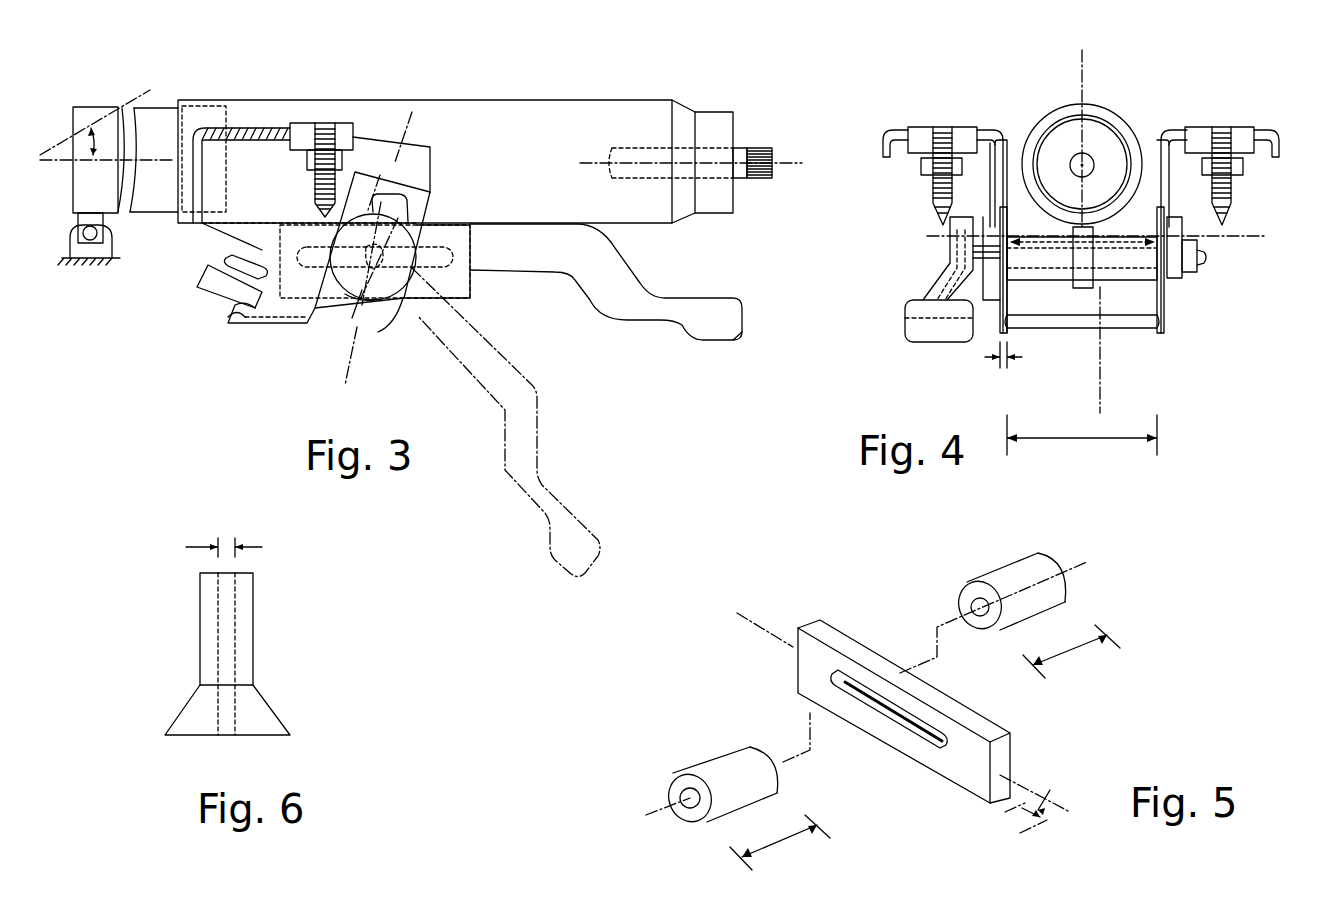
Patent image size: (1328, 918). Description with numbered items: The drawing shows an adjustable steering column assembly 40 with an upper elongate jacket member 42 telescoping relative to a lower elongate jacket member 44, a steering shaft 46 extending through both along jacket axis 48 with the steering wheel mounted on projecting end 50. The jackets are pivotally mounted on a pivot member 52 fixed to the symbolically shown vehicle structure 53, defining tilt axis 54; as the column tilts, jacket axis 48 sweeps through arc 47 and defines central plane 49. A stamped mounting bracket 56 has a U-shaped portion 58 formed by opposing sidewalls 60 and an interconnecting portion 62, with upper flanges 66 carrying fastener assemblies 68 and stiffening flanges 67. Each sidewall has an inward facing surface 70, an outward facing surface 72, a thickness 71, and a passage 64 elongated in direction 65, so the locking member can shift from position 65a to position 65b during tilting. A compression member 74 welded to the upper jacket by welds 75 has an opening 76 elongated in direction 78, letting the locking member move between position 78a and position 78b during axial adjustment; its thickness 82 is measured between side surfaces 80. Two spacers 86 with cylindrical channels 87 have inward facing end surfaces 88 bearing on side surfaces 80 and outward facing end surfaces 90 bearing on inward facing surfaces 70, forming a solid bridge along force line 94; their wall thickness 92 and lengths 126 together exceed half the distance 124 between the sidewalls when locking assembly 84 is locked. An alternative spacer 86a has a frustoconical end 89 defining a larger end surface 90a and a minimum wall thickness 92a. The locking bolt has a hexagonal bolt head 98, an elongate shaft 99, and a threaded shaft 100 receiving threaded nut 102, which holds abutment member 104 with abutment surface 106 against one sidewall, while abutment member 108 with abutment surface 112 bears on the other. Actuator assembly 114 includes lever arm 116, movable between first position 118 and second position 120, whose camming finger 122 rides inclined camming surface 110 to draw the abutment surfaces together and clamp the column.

In FIG. 3, the adjustable steering column assembly 40 is at (403, 77).
In FIG. 4, the adjustable steering column assembly 40 is at (1117, 90).
In FIG. 3, the upper elongate jacket member 42 is at (578, 102).
In FIG. 4, the upper elongate jacket member 42 is at (1046, 110).
In FIG. 3, the lower elongate jacket member 44 is at (147, 110).
In FIG. 3, the steering shaft 46 is at (745, 148).
In FIG. 4, the steering shaft 46 is at (1093, 160).
In FIG. 3, the arc 47 is at (93, 125).
In FIG. 3, the jacket axis 48 is at (55, 163).
In FIG. 4, the jacket axis 48 is at (1028, 120).
In FIG. 4, the central plane 49 is at (1077, 80).
In FIG. 3, the projecting end 50 is at (765, 178).
In FIG. 3, the pivot member 52 is at (98, 243).
In FIG. 3, the vehicle structure 53 is at (113, 242).
In FIG. 3, the tilt axis 54 is at (88, 242).
In FIG. 4, the tilt axis 54 is at (1238, 236).
In FIG. 3, the mounting bracket 56 is at (388, 140).
In FIG. 4, the mounting bracket 56 is at (1167, 135).
In FIG. 4, the U-shaped portion 58 is at (1140, 335).
In FIG. 3, the sidewalls 60 is at (412, 172).
In FIG. 4, the sidewalls 60 is at (1006, 200).
In FIG. 3, the interconnecting portion 62 is at (228, 322).
In FIG. 4, the interconnecting portion 62 is at (1115, 330).
In FIG. 3, the passage 64 is at (410, 200).
In FIG. 3, the direction 65 is at (340, 360).
In FIG. 3, the position 65a is at (395, 305).
In FIG. 3, the position 65b is at (362, 300).
In FIG. 3, the upper flanges 66 is at (210, 128).
In FIG. 4, the upper flanges 66 is at (897, 132).
In FIG. 4, the stiffening flanges 67 is at (990, 150).
In FIG. 3, the fastener assemblies 68 is at (305, 123).
In FIG. 4, the fastener assemblies 68 is at (920, 127).
In FIG. 4, the inward facing surface 70 is at (1030, 332).
In FIG. 4, the thickness 71 is at (995, 362).
In FIG. 4, the outward facing surface 72 is at (1002, 332).
In FIG. 3, the compression member 74 is at (470, 290).
In FIG. 4, the compression member 74 is at (1070, 330).
In FIG. 5, the compression member 74 is at (810, 628).
In FIG. 4, the welds 75 is at (1010, 210).
In FIG. 5, the opening 76 is at (918, 745).
In FIG. 5, the direction 78 is at (1045, 795).
In FIG. 5, the position 78a is at (830, 688).
In FIG. 5, the position 78b is at (902, 735).
In FIG. 5, the side surfaces 80 is at (1015, 752).
In FIG. 5, the thickness 82 is at (1030, 825).
In FIG. 4, the locking assembly 84 is at (1145, 213).
In FIG. 4, the spacers 86 is at (1040, 292).
In FIG. 5, the spacers 86 is at (712, 762).
In FIG. 6, the alternative spacer 86a is at (255, 645).
In FIG. 6, the cylindrical channel 87 is at (232, 608).
In FIG. 5, the cylindrical channel 87 is at (685, 800).
In FIG. 5, the inward facing end surface 88 is at (780, 778).
In FIG. 6, the frustoconical end 89 is at (185, 710).
In FIG. 5, the outward facing end surface 90 is at (672, 780).
In FIG. 6, the end surface 90a is at (190, 737).
In FIG. 5, the wall thickness 92 is at (695, 810).
In FIG. 6, the minimum wall thickness 92a is at (186, 547).
In FIG. 4, the force line 94 is at (1084, 226).
In FIG. 4, the hexagonal bolt head 98 is at (945, 250).
In FIG. 4, the elongate shaft 99 is at (1102, 356).
In FIG. 4, the threaded shaft 100 is at (1200, 255).
In FIG. 4, the threaded nut 102 is at (1187, 270).
In FIG. 4, the abutment member 104 is at (1168, 302).
In FIG. 4, the abutment surface 106 is at (1152, 262).
In FIG. 4, the abutment member 108 is at (985, 237).
In FIG. 4, the inclined camming surface 110 is at (963, 270).
In FIG. 4, the abutment surface 112 is at (1022, 268).
In FIG. 4, the actuator assembly 114 is at (922, 283).
In FIG. 3, the lever arm 116 is at (632, 310).
In FIG. 4, the lever arm 116 is at (905, 328).
In FIG. 3, the first position 118 is at (525, 505).
In FIG. 3, the second position 120 is at (718, 340).
In FIG. 4, the camming finger 122 is at (990, 241).
In FIG. 4, the distance 124 is at (1117, 438).
In FIG. 5, the lengths 126 is at (770, 845).